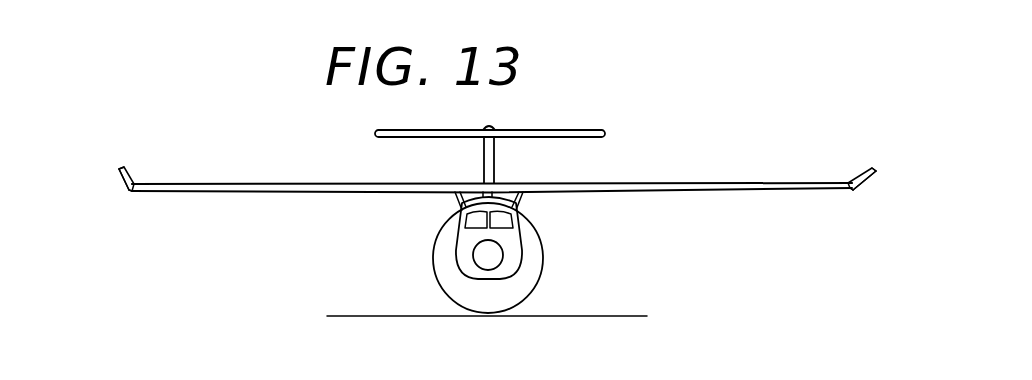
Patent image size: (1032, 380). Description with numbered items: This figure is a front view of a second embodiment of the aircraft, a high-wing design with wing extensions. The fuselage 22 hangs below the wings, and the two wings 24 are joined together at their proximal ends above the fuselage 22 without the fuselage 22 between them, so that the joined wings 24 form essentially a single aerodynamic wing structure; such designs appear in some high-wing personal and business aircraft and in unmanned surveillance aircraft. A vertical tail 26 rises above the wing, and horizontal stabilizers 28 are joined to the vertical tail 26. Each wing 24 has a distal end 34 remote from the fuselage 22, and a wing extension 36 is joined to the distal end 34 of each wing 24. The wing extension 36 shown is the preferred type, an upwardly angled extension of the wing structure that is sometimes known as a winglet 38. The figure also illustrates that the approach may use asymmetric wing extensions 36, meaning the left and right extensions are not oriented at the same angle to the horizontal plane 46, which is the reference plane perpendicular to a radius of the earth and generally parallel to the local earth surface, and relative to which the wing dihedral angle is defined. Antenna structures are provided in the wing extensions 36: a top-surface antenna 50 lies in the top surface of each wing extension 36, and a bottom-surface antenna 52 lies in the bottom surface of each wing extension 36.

The fuselage 22 is at (514, 257).
The wing 24 is at (316, 183).
The vertical tail 26 is at (495, 152).
The horizontal stabilizers 28 is at (547, 130).
The distal end 34 is at (129, 191).
The wing extension 36 is at (139, 168).
The winglet 38 is at (110, 185).
The horizontal plane 46 is at (625, 316).
The top-surface antenna 50 is at (124, 170).
The bottom-surface antenna 52 is at (120, 172).